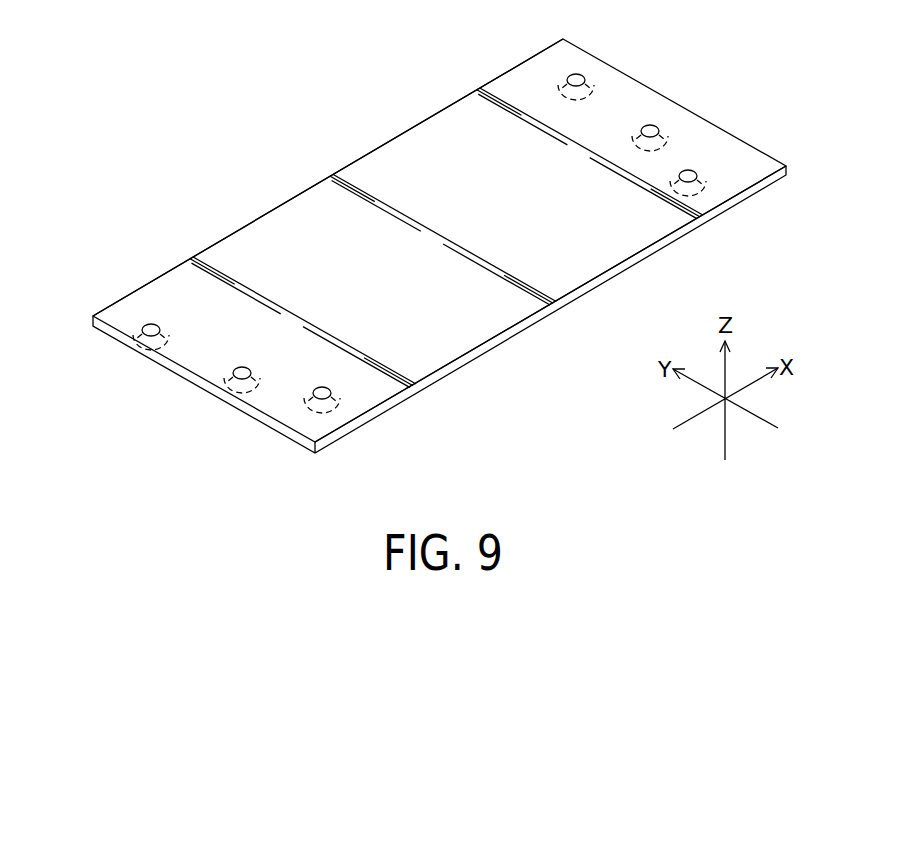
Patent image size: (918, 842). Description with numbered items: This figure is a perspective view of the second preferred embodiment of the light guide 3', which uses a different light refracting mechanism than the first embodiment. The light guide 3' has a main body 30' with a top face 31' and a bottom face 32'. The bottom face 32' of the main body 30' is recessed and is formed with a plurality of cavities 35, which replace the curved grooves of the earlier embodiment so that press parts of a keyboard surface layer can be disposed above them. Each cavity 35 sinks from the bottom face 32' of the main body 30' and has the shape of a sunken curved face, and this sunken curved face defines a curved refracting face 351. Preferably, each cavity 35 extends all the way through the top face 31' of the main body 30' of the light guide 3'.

The light guide 3' is at (439, 246).
The main body 30' is at (328, 177).
The top face 31' is at (446, 238).
The bottom face 32' is at (550, 304).
The cavity 35 is at (578, 76).
The curved refracting face 351 is at (594, 83).